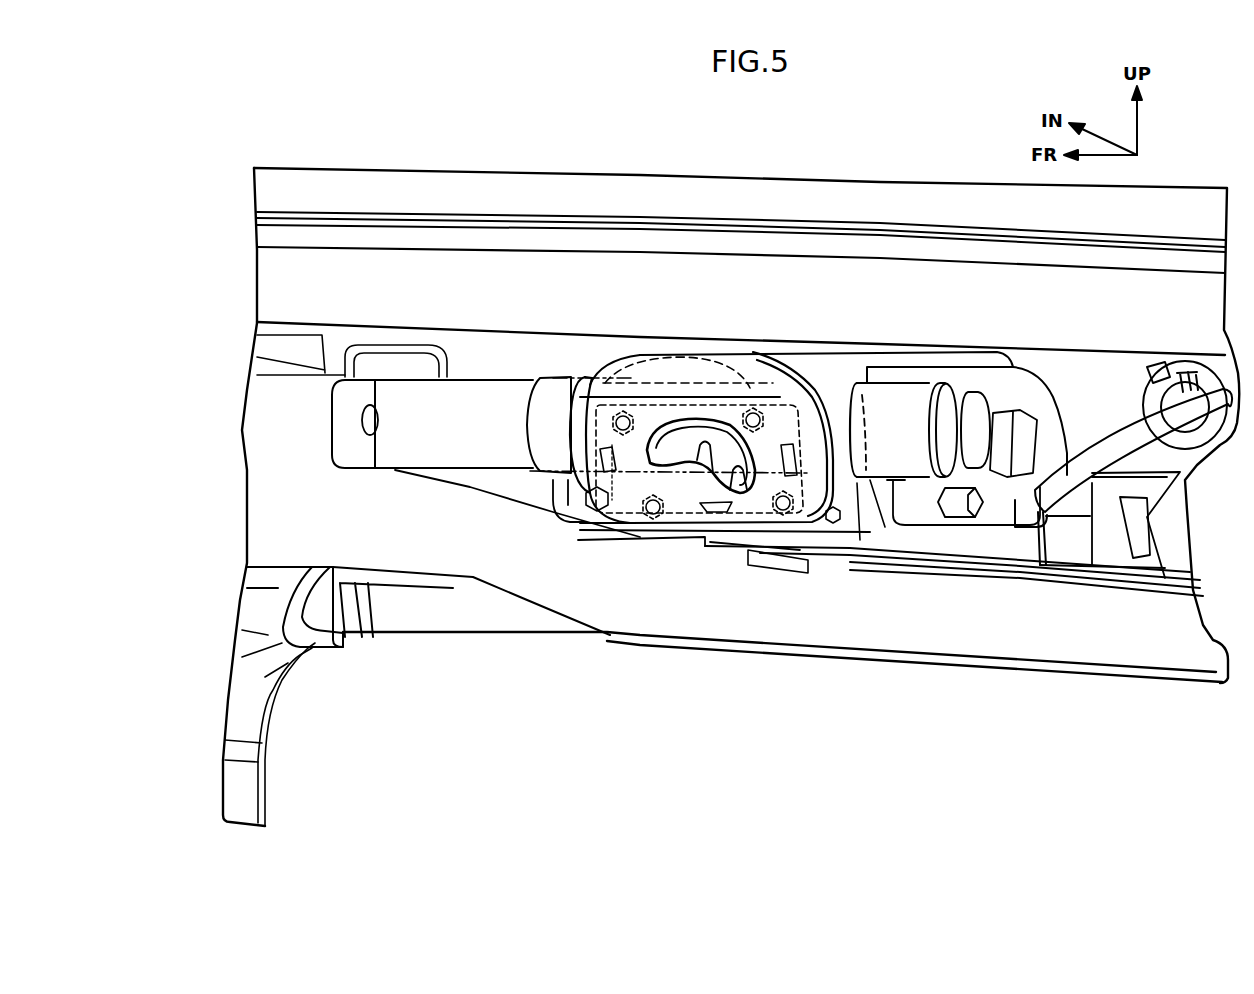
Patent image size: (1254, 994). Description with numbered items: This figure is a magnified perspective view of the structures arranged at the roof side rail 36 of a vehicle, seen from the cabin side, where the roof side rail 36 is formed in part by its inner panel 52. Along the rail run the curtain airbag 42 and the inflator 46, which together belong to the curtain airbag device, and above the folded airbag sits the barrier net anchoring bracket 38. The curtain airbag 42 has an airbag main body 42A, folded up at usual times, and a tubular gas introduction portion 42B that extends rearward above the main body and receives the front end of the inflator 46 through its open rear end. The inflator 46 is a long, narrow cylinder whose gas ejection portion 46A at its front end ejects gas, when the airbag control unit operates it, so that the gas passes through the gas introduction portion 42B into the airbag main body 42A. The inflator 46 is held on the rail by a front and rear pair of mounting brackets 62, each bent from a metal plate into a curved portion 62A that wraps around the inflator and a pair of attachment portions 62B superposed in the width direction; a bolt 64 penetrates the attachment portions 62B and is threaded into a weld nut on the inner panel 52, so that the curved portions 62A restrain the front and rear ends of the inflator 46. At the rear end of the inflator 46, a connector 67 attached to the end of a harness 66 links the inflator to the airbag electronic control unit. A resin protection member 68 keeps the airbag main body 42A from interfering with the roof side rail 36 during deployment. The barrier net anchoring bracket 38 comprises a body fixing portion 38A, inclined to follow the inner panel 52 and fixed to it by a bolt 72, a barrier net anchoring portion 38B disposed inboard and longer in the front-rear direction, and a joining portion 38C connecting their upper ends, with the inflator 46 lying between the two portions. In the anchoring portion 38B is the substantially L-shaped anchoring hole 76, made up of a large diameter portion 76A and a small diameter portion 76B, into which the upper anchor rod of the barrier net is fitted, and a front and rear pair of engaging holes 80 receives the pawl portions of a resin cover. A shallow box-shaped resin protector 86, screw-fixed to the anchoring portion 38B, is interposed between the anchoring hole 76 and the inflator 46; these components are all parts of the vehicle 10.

The vehicle body structure 10 is at (745, 288).
The roof side rail 36 is at (889, 220).
The barrier net anchoring bracket 38 is at (717, 347).
The body fixing portion 38A is at (862, 555).
The barrier net anchoring portion 38B is at (720, 540).
The joining portion 38C is at (790, 352).
The curtain airbag 42 is at (466, 598).
The airbag main body 42A is at (920, 640).
The gas introduction portion 42B is at (422, 478).
The inflator 46 is at (483, 397).
The gas ejection portion 46A is at (370, 460).
The inner panel 52 is at (363, 263).
The mounting bracket 62 is at (575, 380).
The curved portion 62A is at (547, 397).
The attachment portion 62B is at (597, 490).
The bolt 64 is at (592, 505).
The harness 66 is at (1103, 433).
The connector 67 is at (1033, 417).
The protection member 68 is at (1118, 677).
The bolt 72 is at (838, 560).
The anchoring hole 76 is at (713, 473).
The large diameter portion 76A is at (738, 485).
The small diameter portion 76B is at (683, 445).
The engaging hole 80 is at (663, 493).
The protector 86 is at (677, 517).